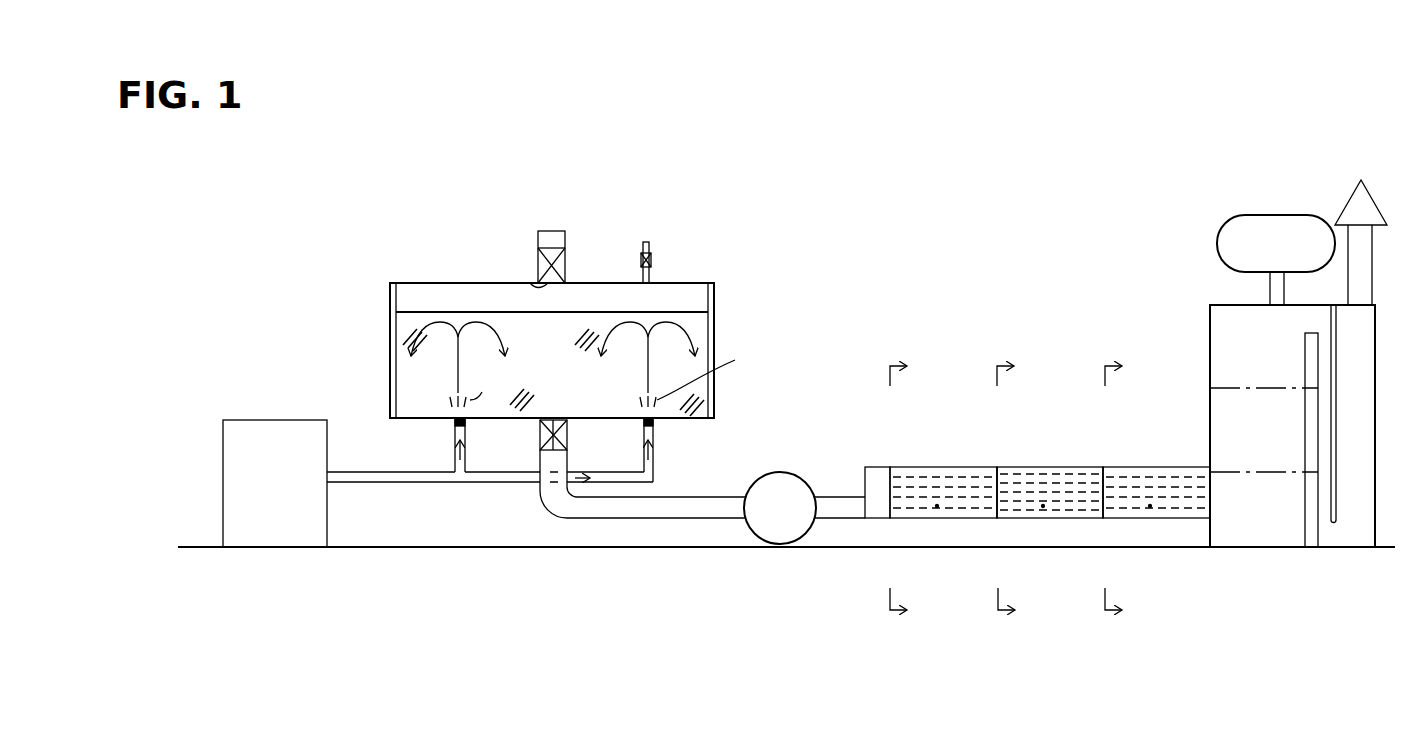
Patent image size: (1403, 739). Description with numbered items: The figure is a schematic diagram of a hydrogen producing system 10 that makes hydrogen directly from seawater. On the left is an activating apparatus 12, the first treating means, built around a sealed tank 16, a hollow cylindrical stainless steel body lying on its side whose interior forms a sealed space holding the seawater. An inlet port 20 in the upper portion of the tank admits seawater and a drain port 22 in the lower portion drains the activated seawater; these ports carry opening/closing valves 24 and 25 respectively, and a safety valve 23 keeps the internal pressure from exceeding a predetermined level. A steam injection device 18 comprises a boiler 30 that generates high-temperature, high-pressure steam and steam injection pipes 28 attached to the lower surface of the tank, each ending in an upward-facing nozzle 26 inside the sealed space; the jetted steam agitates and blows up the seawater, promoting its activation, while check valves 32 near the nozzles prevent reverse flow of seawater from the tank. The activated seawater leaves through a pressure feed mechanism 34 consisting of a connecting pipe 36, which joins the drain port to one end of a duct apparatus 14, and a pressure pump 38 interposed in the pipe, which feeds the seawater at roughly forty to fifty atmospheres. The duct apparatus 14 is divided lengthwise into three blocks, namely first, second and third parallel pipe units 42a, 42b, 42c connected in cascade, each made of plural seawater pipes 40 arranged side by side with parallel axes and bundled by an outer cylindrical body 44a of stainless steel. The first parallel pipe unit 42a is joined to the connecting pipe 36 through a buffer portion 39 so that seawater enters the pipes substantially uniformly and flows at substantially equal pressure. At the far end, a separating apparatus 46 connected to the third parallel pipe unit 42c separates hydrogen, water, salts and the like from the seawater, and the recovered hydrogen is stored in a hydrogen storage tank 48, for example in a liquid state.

The hydrogen producing system 10 is at (885, 157).
The activating apparatus 12 is at (708, 186).
The duct apparatus 14 is at (958, 320).
The sealed tank 16 is at (690, 283).
The steam injection device 18 is at (360, 353).
The inlet port 20 is at (540, 283).
The drain port 22 is at (540, 421).
The safety valve 23 is at (653, 258).
The opening/closing valve 24 is at (566, 263).
The opening/closing valve 25 is at (558, 440).
The nozzle 26 is at (453, 414).
The steam injection pipe 28 is at (455, 443).
The boiler 30 is at (273, 420).
The check valve 32 is at (466, 422).
The pressure feed mechanism 34 is at (857, 598).
The connecting pipe 36 is at (703, 519).
The pressure pump 38 is at (757, 533).
The buffer portion 39 is at (866, 467).
The seawater pipe 40 is at (937, 506).
The first parallel pipe unit 42a is at (993, 460).
The second parallel pipe unit 42b is at (1100, 460).
The third parallel pipe unit 42c is at (1210, 460).
The outer cylindrical body 44a is at (982, 518).
The separating apparatus 46 is at (1188, 305).
The hydrogen storage tank 48 is at (1243, 215).